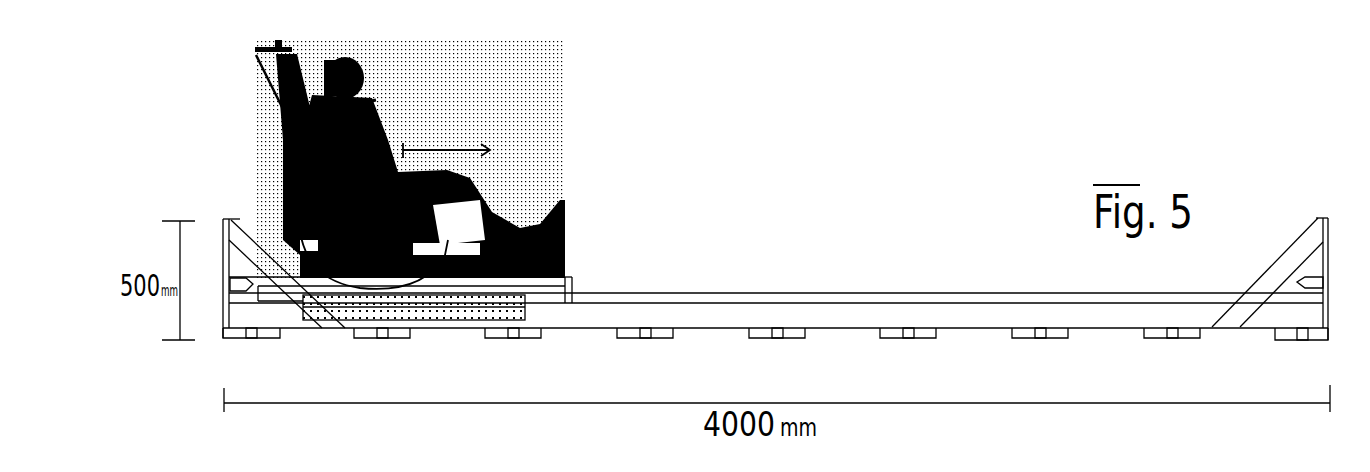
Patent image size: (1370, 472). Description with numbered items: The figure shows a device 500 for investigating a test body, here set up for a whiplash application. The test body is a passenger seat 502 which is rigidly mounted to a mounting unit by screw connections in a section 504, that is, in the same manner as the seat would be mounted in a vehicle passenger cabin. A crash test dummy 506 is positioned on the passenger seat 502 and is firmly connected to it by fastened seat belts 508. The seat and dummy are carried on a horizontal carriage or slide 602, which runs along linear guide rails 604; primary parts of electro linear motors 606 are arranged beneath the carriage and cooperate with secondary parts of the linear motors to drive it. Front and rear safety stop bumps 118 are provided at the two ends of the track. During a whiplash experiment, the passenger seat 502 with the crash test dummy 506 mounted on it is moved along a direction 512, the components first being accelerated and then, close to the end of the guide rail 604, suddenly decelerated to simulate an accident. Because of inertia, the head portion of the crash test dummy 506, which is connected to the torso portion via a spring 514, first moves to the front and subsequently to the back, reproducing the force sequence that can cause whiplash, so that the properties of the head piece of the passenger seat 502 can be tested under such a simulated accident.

The device for investigating a test body 500 is at (1013, 133).
The passenger seat 502 is at (295, 147).
The section 504 is at (300, 232).
The crash test dummy 506 is at (360, 64).
The seat belts 508 is at (313, 87).
The direction 512 is at (437, 147).
The spring 514 is at (360, 97).
The horizontal carriage or slide 602 is at (550, 278).
The linear guide rails 604 is at (828, 300).
The primary parts of electro linear motors 606 is at (440, 312).
The front and rear safety stop bumps 118 is at (327, 328).